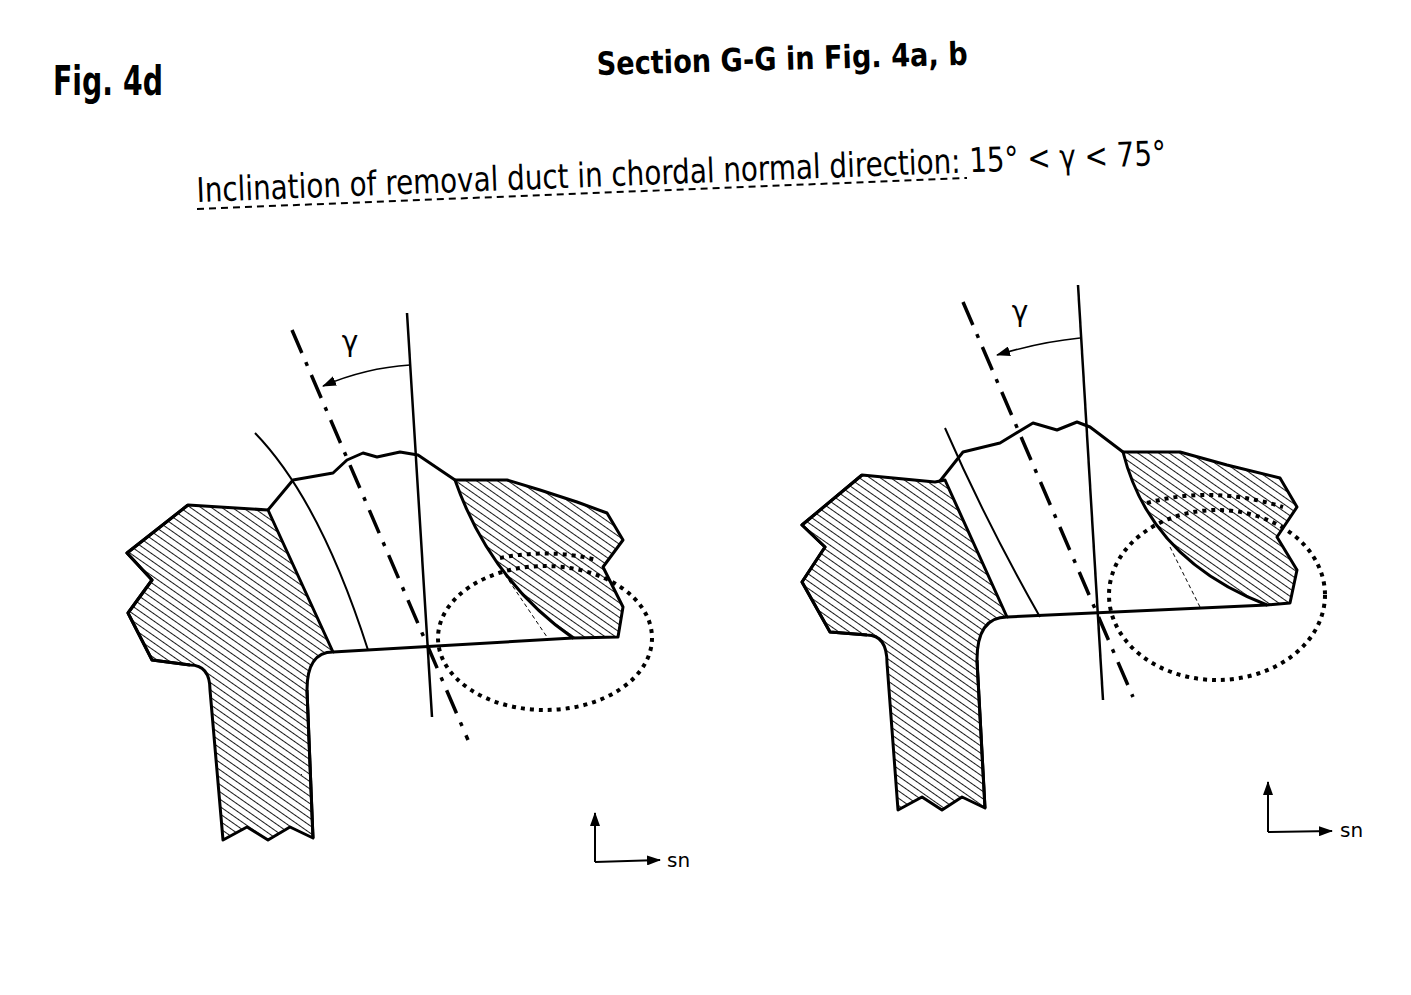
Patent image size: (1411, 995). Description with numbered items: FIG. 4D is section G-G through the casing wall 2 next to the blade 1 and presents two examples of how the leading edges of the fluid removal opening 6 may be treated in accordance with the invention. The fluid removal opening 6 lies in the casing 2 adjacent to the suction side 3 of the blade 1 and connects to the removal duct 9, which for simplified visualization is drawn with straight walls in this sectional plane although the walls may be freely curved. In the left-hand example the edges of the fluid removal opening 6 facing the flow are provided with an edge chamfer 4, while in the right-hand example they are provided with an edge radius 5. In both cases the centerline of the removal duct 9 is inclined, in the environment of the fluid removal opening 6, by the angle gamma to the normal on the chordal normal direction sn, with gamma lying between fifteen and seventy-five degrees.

The blade 1 is at (265, 820).
The casing (wall) 2 is at (528, 517).
The suction side of blade 3 is at (317, 800).
The edge chamfer 4 is at (547, 640).
The edge radius 5 is at (1220, 607).
The fluid removal opening (FRO) 6 is at (634, 522).
The removal duct 9 is at (432, 483).